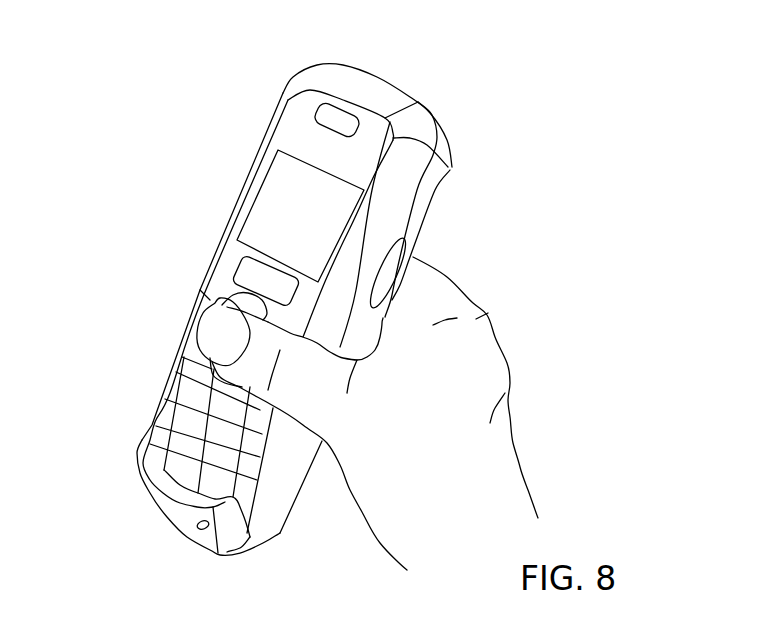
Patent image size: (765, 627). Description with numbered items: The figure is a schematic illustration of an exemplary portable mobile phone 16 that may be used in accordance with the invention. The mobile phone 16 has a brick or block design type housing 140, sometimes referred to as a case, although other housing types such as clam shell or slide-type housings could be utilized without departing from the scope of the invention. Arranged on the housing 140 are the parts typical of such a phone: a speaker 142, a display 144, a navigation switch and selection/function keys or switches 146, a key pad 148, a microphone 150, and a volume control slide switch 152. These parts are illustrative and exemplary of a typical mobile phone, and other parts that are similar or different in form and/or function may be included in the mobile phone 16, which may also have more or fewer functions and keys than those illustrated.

The mobile phone 16 is at (298, 75).
The housing 140 is at (277, 110).
The speaker 142 is at (320, 115).
The display 144 is at (280, 185).
The navigation switch and selection/function keys or switches 146 is at (226, 294).
The key pad 148 is at (190, 365).
The microphone 150 is at (200, 530).
The volume control slide switch 152 is at (401, 249).